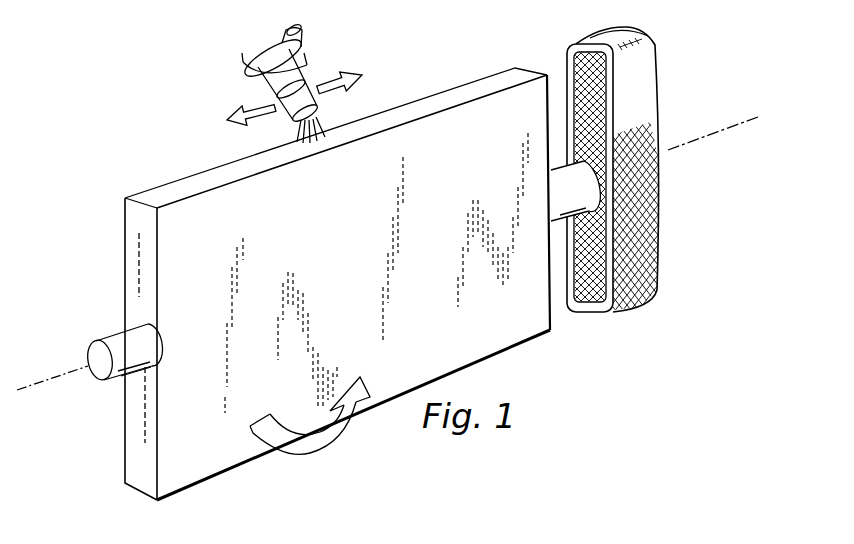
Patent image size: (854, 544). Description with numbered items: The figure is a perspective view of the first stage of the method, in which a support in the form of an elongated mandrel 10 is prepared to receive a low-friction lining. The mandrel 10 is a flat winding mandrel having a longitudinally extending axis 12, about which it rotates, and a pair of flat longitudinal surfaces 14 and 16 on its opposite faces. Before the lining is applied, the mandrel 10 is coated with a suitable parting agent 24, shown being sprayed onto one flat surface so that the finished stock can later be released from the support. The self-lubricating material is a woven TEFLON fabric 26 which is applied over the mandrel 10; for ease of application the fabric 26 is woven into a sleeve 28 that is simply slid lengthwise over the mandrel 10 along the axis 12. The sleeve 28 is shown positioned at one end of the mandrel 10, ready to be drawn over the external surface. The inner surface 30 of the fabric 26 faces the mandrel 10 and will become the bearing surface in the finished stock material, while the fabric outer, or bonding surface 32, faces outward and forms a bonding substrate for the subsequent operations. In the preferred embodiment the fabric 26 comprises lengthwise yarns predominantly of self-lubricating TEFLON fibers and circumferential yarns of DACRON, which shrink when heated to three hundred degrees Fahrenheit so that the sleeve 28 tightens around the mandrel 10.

The elongated mandrel 10 is at (116, 233).
The longitudinally extending axis 12 is at (100, 363).
The flat longitudinal surface 14 is at (136, 288).
The flat longitudinal surface 16 is at (480, 334).
The parting agent 24 is at (272, 83).
The woven TEFLON fabric 26 is at (620, 34).
The sleeve 28 is at (686, 196).
The inner surface 30 is at (577, 58).
The bonding surface 32 is at (643, 80).